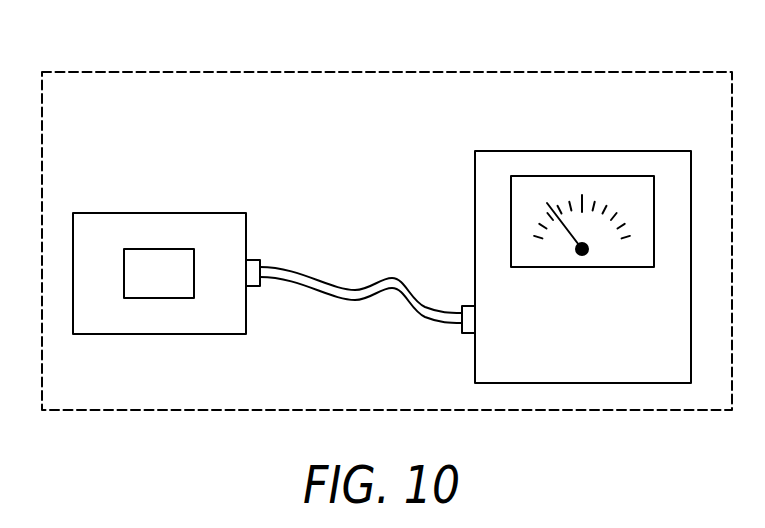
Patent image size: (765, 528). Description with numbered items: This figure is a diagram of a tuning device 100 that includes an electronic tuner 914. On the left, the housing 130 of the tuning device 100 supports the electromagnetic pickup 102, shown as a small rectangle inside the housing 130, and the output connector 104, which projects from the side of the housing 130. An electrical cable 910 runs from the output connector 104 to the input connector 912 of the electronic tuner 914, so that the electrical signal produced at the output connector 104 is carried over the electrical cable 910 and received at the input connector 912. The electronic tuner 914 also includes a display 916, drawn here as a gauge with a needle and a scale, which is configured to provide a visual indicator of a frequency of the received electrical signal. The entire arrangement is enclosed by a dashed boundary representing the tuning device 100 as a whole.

The tuning device 100 is at (328, 72).
The housing 130 is at (103, 213).
The electromagnetic pickup 102 is at (167, 290).
The output connector 104 is at (266, 263).
The electrical cable 910 is at (340, 287).
The input connector 912 is at (463, 308).
The electronic tuner 914 is at (480, 145).
The display 916 is at (628, 192).